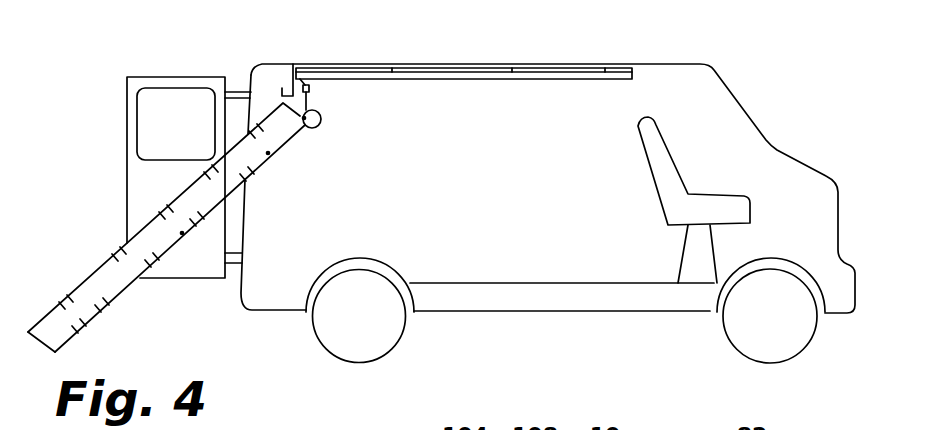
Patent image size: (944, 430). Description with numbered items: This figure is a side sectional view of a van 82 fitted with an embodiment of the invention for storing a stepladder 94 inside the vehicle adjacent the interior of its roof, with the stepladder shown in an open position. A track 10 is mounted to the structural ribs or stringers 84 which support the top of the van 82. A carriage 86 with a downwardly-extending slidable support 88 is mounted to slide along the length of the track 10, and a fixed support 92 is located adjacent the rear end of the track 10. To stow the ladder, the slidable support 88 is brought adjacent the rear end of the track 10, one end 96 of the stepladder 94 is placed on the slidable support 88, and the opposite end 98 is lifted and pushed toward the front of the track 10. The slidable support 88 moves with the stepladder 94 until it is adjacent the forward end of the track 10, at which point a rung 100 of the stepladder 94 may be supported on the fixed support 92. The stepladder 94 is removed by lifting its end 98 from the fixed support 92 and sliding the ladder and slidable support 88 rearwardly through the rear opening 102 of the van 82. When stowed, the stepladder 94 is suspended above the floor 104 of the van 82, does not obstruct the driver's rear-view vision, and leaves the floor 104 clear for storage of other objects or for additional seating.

The track 10 is at (547, 79).
The van 82 is at (716, 69).
The structural ribs or stringers 84 is at (303, 66).
The carriage 86 is at (297, 64).
The slidable support 88 is at (317, 96).
The fixed support 92 is at (285, 84).
The stepladder 94 is at (128, 250).
The end of the stepladder 96 is at (300, 128).
The opposite end of the stepladder 98 is at (55, 322).
The rung 100 is at (88, 321).
The rear opening 102 is at (244, 108).
The floor 104 is at (448, 283).